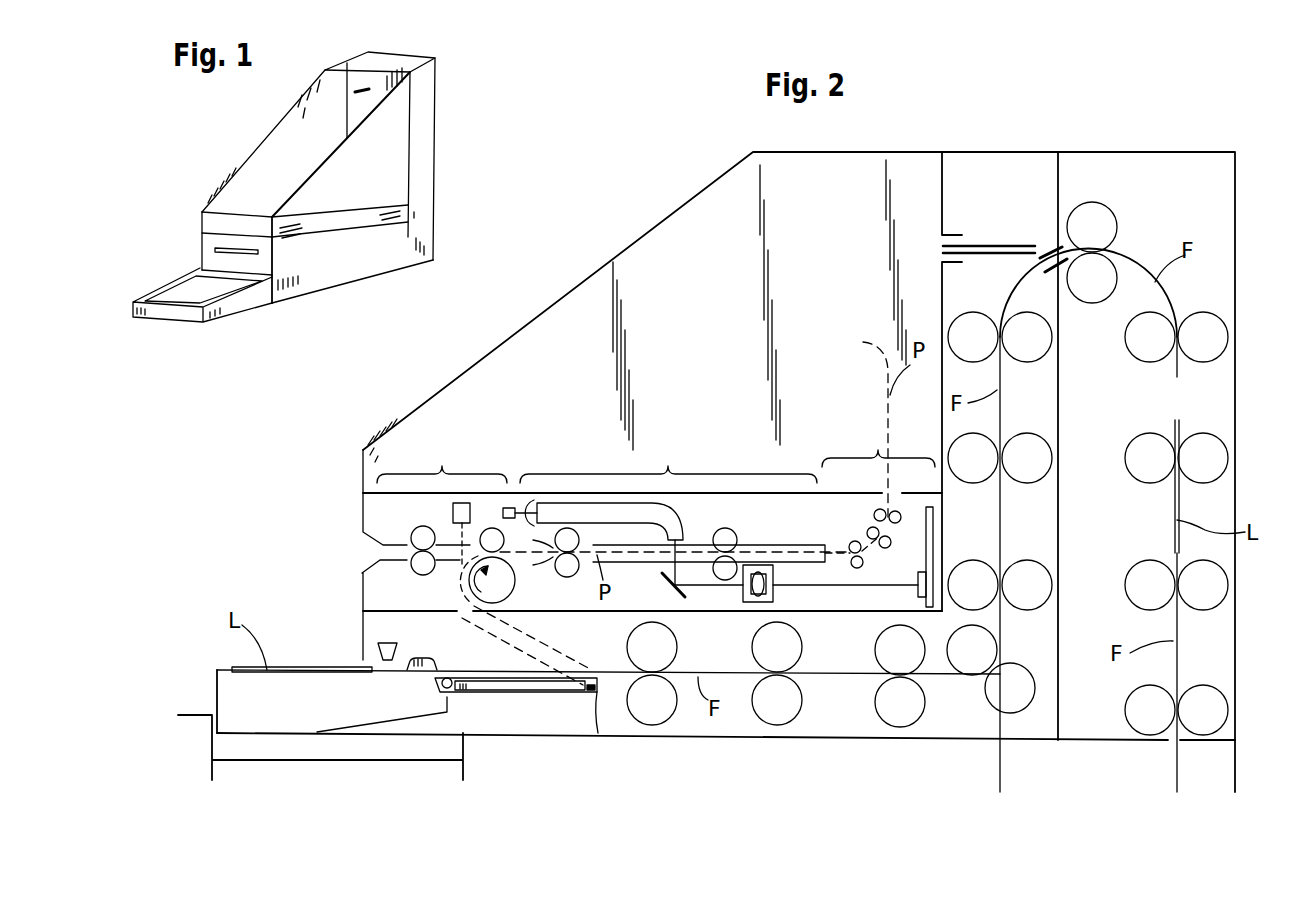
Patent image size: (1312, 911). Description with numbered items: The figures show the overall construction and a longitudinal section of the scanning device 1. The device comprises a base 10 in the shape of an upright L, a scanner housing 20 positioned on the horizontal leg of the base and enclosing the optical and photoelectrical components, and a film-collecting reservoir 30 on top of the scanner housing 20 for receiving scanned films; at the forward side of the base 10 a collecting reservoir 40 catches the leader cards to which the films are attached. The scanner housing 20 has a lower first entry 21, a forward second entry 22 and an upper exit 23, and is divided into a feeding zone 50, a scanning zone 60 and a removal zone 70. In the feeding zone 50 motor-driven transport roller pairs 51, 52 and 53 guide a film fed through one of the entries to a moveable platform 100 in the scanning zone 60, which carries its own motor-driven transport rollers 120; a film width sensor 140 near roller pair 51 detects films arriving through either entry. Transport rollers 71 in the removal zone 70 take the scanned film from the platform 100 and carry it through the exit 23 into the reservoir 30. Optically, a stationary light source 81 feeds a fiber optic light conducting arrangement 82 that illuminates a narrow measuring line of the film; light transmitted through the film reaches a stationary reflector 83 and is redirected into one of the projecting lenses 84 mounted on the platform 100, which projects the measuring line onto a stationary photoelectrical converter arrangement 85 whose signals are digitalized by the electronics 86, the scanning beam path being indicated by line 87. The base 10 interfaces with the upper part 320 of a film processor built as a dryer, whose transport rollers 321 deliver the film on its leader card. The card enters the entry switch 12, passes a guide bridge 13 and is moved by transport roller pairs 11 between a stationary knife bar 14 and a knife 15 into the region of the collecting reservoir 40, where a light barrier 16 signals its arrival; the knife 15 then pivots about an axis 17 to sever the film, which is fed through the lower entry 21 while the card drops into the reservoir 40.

In FIG. 1, the scanning device 1 is at (450, 121).
In FIG. 1, the base 10 is at (425, 213).
In FIG. 2, the base 10 is at (975, 718).
In FIG. 2, the transport roller pairs 11 is at (1028, 343).
In FIG. 2, the entry switch 12 is at (1047, 252).
In FIG. 2, the guide bridge 13 is at (983, 246).
In FIG. 2, the knife bar 14 is at (423, 660).
In FIG. 2, the knife 15 is at (477, 688).
In FIG. 2, the light barrier 16 is at (378, 650).
In FIG. 2, the axis 17 is at (597, 735).
In FIG. 1, the scanner housing 20 is at (340, 240).
In FIG. 2, the scanner housing 20 is at (378, 503).
In FIG. 2, the lower first entry 21 is at (498, 612).
In FIG. 2, the forward second entry 22 is at (390, 552).
In FIG. 2, the upper exit 23 is at (882, 495).
In FIG. 1, the film-collecting reservoir 30 is at (262, 168).
In FIG. 2, the film-collecting reservoir 30 is at (525, 373).
In FIG. 1, the collecting reservoir 40 is at (185, 295).
In FIG. 2, the collecting reservoir 40 is at (247, 695).
In FIG. 2, the feeding zone 50 is at (442, 460).
In FIG. 2, the transport roller pair 51 is at (503, 590).
In FIG. 2, the transport roller pair 52 is at (427, 565).
In FIG. 2, the transport roller pair 53 is at (570, 573).
In FIG. 2, the scanning zone 60 is at (668, 460).
In FIG. 2, the removal zone 70 is at (878, 445).
In FIG. 2, the transport rollers 71 is at (852, 544).
In FIG. 2, the light source 81 is at (505, 507).
In FIG. 2, the light conducting arrangement 82 is at (677, 512).
In FIG. 2, the reflector 83 is at (672, 586).
In FIG. 2, the projecting lenses 84 is at (753, 602).
In FIG. 2, the photoelectrical converter arrangement 85 is at (918, 593).
In FIG. 2, the electronics 86 is at (933, 533).
In FIG. 2, the scanning beam 87 is at (820, 587).
In FIG. 2, the moveable platform 100 is at (763, 543).
In FIG. 2, the transport rollers 120 is at (730, 528).
In FIG. 2, the film width sensor 140 is at (453, 513).
In FIG. 2, the upper part of film processor 320 is at (1212, 208).
In FIG. 2, the transport rollers 321 is at (1103, 218).